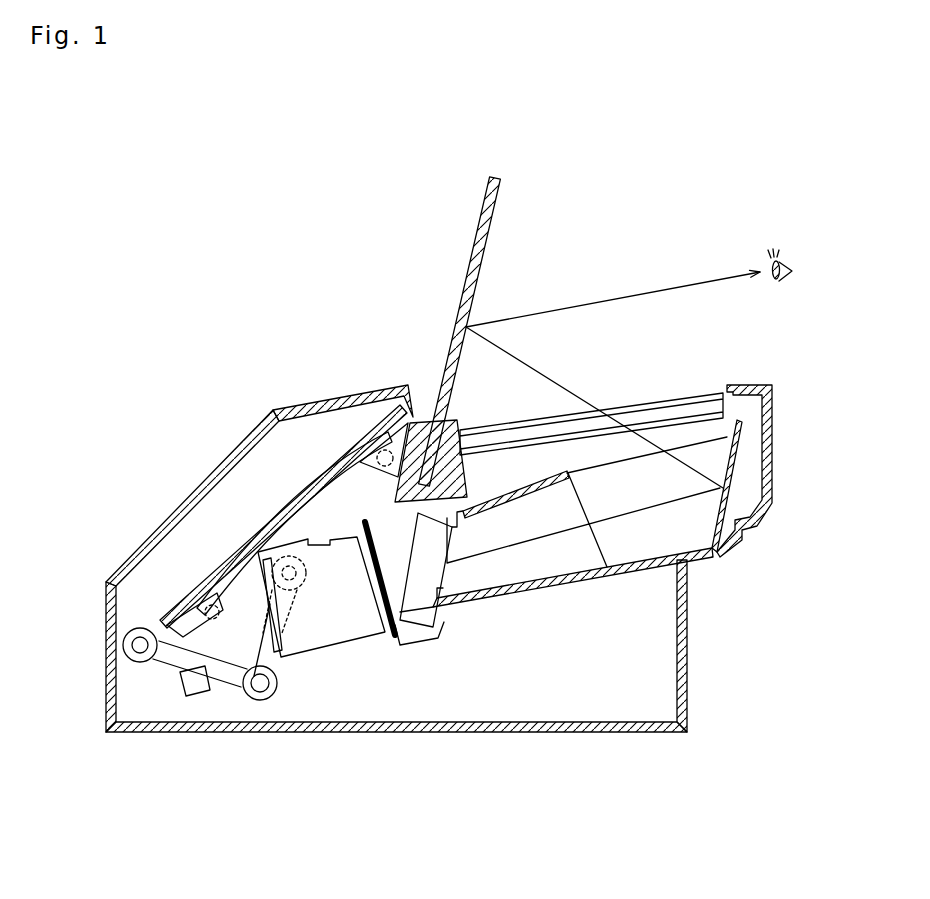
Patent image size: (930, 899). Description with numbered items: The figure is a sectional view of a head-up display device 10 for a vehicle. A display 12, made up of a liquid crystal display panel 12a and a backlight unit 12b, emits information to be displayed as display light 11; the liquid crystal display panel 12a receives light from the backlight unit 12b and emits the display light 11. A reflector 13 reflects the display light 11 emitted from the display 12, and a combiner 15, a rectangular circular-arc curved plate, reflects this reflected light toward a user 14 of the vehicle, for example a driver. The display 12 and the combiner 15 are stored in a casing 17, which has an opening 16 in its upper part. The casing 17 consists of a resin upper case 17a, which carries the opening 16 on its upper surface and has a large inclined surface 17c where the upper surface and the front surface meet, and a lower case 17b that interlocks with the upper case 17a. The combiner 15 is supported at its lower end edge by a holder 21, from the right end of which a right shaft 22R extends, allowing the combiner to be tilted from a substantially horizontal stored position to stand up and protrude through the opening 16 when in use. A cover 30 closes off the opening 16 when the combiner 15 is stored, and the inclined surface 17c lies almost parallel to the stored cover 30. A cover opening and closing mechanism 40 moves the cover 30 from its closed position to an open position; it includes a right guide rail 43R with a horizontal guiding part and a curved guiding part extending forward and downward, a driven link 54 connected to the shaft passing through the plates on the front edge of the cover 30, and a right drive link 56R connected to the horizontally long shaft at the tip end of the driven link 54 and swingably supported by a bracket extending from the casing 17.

The head-up display device 10 is at (235, 345).
The display light 11 is at (557, 533).
The display 12 is at (355, 649).
The liquid crystal display panel 12a is at (413, 627).
The backlight unit 12b is at (332, 633).
The reflector 13 is at (730, 495).
The user 14 is at (785, 262).
The combiner 15 is at (470, 248).
The opening 16 is at (735, 383).
The casing 17 is at (220, 742).
The upper case 17a is at (350, 398).
The lower case 17b is at (520, 733).
The inclined surface 17c is at (188, 497).
The holder 21 is at (455, 422).
The right shaft 22R is at (457, 487).
The cover 30 is at (265, 505).
The cover opening and closing mechanism 40 is at (228, 714).
The right guide rail 43R is at (630, 408).
The driven link 54 is at (223, 690).
The right drive link 56R is at (272, 660).